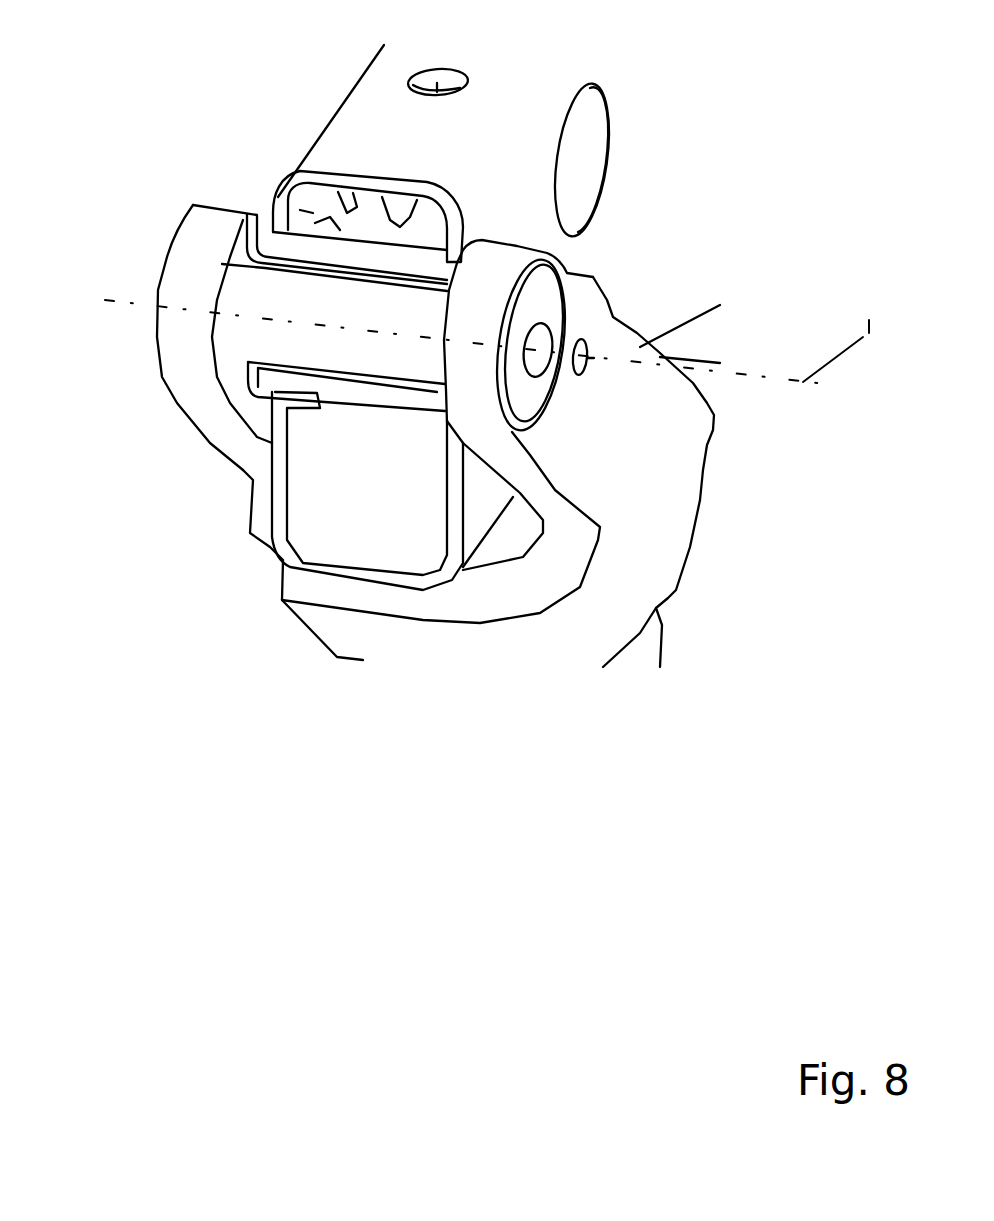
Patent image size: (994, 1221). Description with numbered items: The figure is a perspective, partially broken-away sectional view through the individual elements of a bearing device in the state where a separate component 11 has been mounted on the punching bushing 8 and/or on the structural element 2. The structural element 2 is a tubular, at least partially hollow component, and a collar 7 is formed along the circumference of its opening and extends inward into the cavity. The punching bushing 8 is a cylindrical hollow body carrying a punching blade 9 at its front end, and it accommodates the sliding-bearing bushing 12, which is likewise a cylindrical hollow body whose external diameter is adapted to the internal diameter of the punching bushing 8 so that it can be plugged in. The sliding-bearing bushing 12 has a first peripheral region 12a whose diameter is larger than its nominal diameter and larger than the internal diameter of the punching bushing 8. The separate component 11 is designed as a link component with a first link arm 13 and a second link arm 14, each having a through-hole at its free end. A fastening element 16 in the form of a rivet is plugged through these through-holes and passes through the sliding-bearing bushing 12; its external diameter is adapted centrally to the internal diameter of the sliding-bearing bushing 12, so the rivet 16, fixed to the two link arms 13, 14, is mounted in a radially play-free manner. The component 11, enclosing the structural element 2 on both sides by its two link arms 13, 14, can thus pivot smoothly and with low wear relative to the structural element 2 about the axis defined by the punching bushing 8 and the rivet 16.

The structural element 2 is at (335, 145).
The collar 7 is at (300, 230).
The punching bushing 8 is at (365, 257).
The punching blade 9 is at (457, 263).
The separate component 11 is at (517, 603).
The sliding-bearing bushing 12 is at (288, 265).
The first peripheral region 12a is at (247, 230).
The first link arm 13 is at (195, 378).
The second link arm 14 is at (650, 490).
The fastening element 16 is at (567, 293).